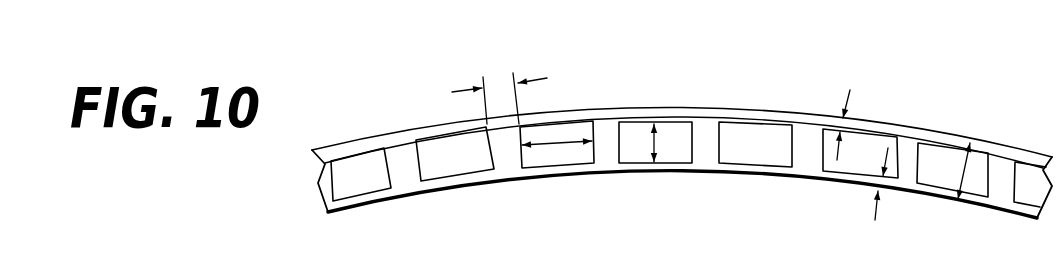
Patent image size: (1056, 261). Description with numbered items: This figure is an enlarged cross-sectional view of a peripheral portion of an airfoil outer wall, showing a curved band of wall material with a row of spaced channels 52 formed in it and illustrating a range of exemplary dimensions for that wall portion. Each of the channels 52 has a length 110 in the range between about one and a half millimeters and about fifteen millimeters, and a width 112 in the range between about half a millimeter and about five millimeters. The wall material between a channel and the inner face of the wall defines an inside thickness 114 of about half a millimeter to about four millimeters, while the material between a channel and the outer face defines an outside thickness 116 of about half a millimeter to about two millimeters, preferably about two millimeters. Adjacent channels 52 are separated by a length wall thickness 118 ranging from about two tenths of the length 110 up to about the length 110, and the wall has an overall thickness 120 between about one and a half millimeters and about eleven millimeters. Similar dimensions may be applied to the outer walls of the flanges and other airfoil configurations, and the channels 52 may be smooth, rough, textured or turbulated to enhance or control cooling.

The channels 52 is at (347, 155).
The length 110 is at (560, 147).
The width 112 is at (655, 143).
The inside thickness 114 is at (880, 178).
The outside thickness 116 is at (840, 125).
The length wall thickness 118 is at (495, 86).
The overall thickness 120 is at (963, 173).